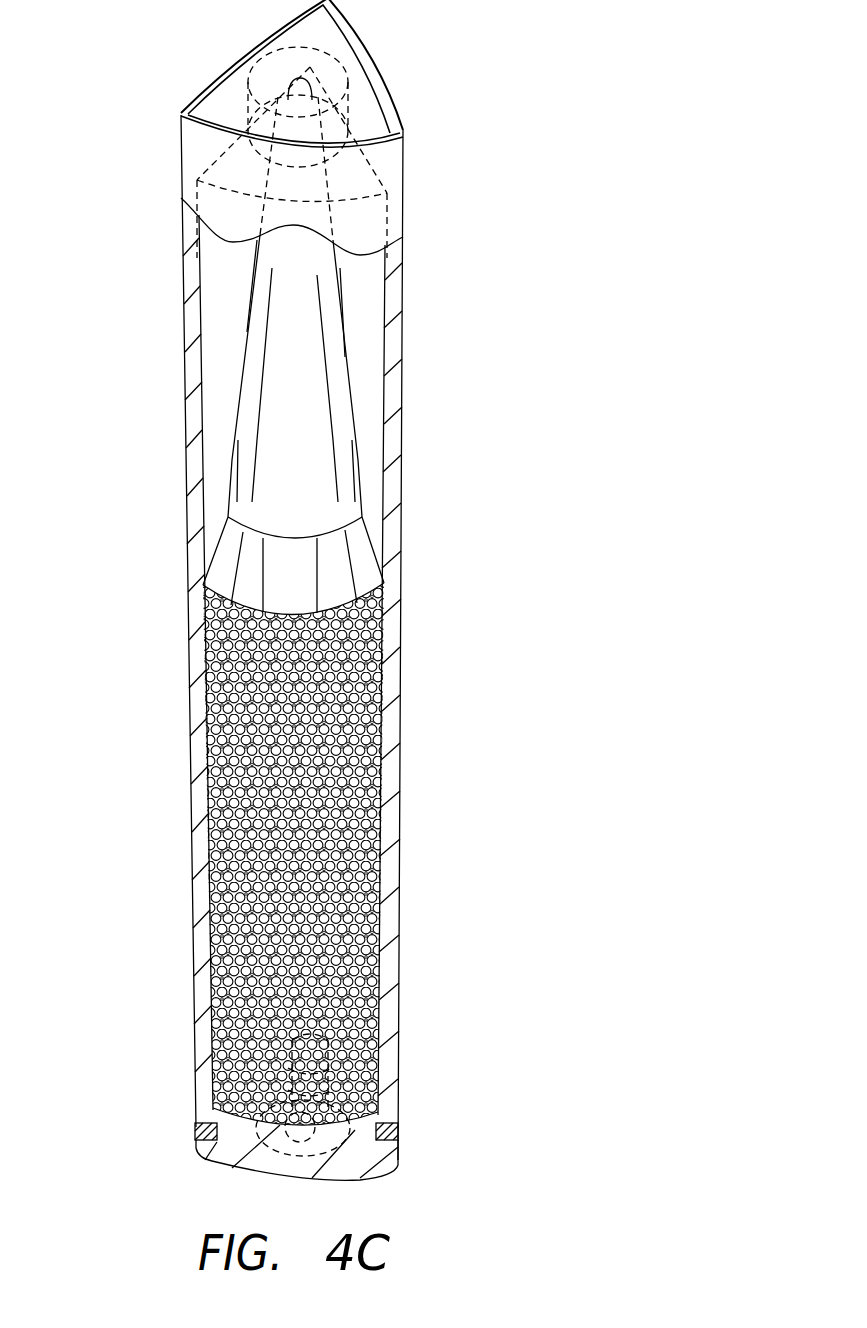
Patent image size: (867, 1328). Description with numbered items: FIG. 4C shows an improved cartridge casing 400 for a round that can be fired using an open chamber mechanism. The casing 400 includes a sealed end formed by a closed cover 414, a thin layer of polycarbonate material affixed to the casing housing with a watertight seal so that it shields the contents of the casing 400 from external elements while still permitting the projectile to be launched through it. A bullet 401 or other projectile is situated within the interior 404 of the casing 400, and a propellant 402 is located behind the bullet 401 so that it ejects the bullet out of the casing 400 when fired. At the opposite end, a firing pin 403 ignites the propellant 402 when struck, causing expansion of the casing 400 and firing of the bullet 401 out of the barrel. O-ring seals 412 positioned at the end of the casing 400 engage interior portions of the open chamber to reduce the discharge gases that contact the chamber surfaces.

The casing 400 is at (377, 58).
The closed cover 414 is at (388, 100).
The interior 404 is at (362, 290).
The bullet 401 is at (350, 365).
The propellant 402 is at (343, 792).
The O-ring seal 412 is at (195, 1132).
The firing pin 403 is at (398, 1163).